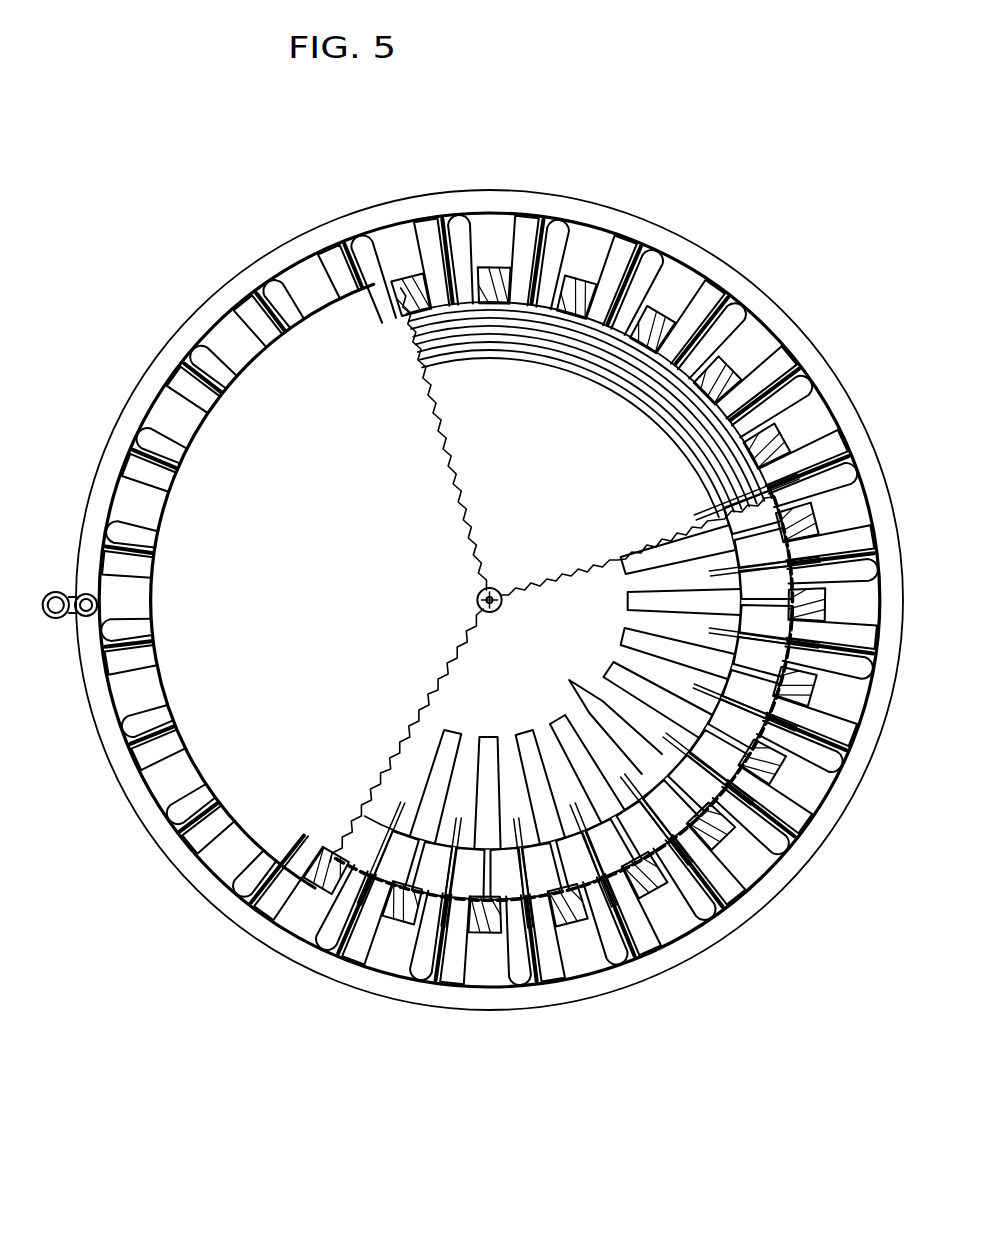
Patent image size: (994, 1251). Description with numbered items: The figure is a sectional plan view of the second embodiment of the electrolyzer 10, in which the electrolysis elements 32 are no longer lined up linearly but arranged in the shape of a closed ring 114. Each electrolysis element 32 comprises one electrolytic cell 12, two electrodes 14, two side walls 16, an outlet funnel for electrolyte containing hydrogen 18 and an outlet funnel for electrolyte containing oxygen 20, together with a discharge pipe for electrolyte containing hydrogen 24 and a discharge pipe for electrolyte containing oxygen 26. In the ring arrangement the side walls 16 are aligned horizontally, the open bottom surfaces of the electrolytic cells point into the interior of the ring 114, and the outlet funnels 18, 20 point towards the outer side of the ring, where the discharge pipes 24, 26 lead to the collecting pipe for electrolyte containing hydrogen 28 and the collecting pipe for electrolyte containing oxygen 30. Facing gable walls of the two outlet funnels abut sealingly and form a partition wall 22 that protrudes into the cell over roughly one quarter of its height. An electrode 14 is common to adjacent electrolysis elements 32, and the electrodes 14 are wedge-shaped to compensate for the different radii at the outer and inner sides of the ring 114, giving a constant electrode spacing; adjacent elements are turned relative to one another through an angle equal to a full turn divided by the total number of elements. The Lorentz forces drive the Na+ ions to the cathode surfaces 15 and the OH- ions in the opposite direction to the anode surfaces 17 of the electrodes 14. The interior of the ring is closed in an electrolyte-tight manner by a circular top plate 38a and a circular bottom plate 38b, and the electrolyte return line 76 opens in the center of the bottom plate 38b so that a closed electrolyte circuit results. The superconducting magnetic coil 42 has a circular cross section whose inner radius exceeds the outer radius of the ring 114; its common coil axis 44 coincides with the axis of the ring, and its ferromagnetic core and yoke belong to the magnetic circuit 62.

The electrolyzer 10 is at (250, 980).
The electrolytic cell 12 is at (452, 764).
The electrode 14 is at (480, 732).
The cathode surface 15 is at (615, 690).
The side wall 16 is at (437, 400).
The anode surface 17 is at (625, 648).
The outlet funnel for electrolyte containing hydrogen 18 is at (777, 890).
The outlet funnel for electrolyte containing oxygen 20 is at (646, 840).
The partition wall 22 is at (585, 700).
The discharge pipe for electrolyte containing hydrogen 24 is at (432, 213).
The discharge pipe for electrolyte containing oxygen 26 is at (462, 240).
The collecting pipe for electrolyte containing hydrogen 28 is at (60, 592).
The collecting pipe for electrolyte containing oxygen 30 is at (88, 618).
The electrolysis element 32 is at (540, 720).
The top plate 38a is at (588, 476).
The bottom plate 38b is at (470, 656).
The superconducting magnetic coil 42 is at (620, 355).
The common coil axis 44 is at (477, 591).
The magnetic circuit 62 is at (333, 332).
The electrolyte return line 76 is at (494, 590).
The ring 114 is at (428, 700).